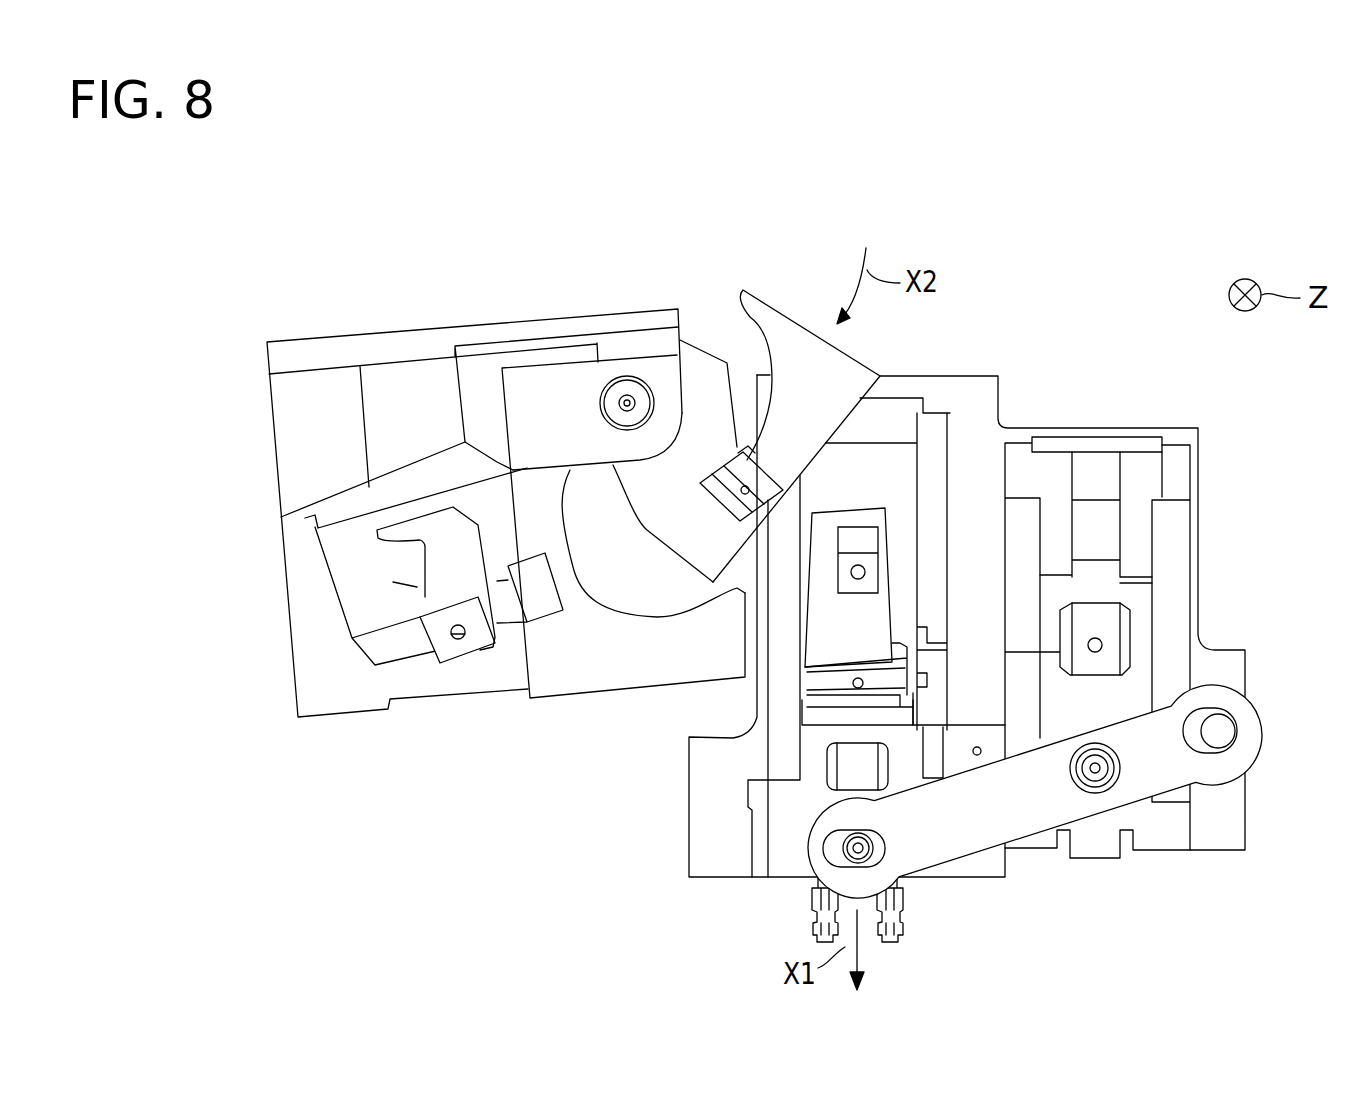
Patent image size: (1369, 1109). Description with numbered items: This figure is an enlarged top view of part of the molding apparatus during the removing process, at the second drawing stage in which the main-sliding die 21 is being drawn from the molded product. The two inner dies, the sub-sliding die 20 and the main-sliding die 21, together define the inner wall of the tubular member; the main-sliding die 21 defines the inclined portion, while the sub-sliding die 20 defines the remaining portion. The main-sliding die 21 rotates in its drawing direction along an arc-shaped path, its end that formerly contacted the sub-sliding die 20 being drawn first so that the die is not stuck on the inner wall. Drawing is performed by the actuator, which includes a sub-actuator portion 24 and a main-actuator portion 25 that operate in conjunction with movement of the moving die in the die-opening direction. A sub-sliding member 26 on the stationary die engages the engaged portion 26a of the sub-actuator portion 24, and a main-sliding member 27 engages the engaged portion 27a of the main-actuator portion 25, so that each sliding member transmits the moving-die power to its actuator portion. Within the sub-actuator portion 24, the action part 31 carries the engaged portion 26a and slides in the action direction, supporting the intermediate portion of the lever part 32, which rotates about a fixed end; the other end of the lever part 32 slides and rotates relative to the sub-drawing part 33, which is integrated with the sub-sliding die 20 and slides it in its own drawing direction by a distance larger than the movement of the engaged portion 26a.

The sub-sliding die 20 is at (827, 545).
The main-sliding die 21 is at (728, 357).
The sub-actuator portion 24 is at (1052, 872).
The main-actuator portion 25 is at (763, 283).
The sub-sliding member 26 is at (1093, 567).
The engaged portion 26a is at (1123, 633).
The main-sliding member 27 is at (428, 597).
The engaged portion 27a is at (412, 527).
The action part 31 is at (1140, 598).
The lever part 32 is at (1173, 763).
The sub-drawing part 33 is at (813, 760).